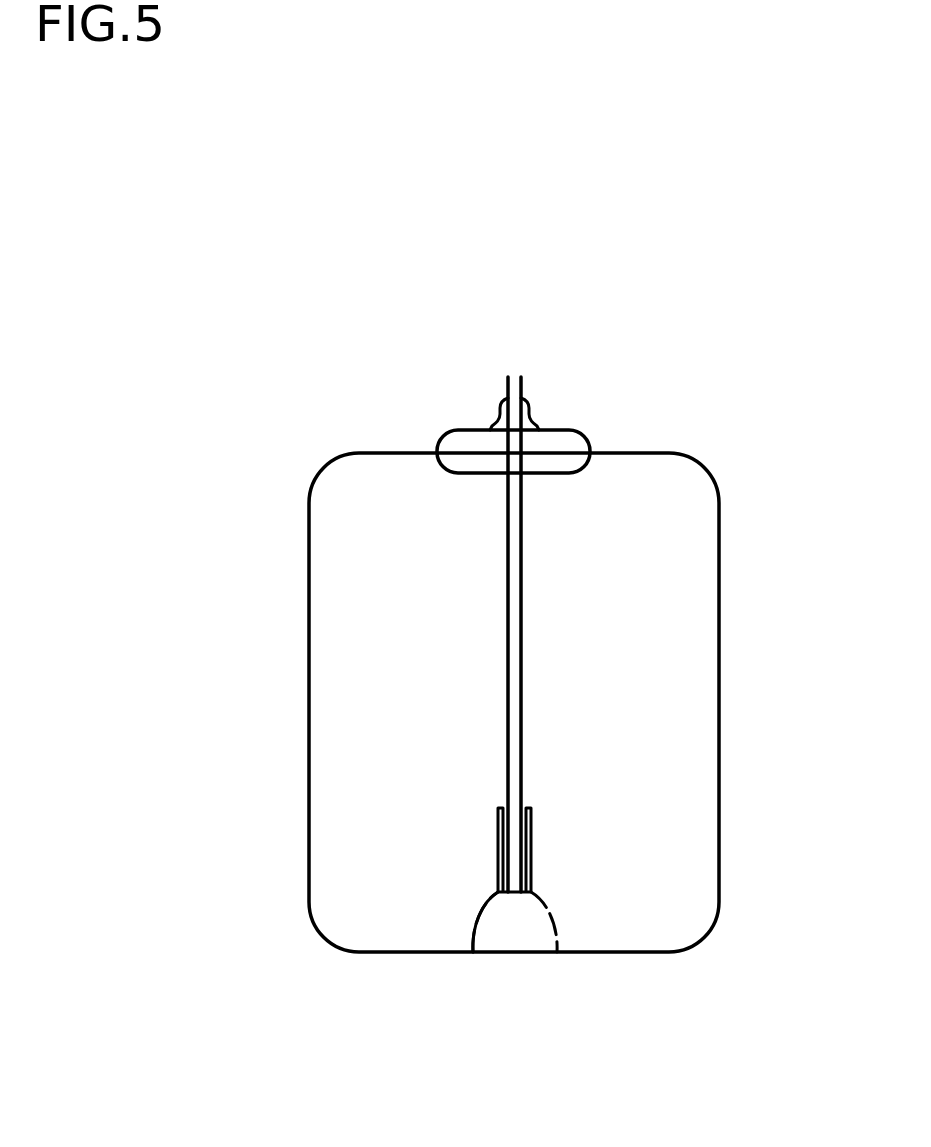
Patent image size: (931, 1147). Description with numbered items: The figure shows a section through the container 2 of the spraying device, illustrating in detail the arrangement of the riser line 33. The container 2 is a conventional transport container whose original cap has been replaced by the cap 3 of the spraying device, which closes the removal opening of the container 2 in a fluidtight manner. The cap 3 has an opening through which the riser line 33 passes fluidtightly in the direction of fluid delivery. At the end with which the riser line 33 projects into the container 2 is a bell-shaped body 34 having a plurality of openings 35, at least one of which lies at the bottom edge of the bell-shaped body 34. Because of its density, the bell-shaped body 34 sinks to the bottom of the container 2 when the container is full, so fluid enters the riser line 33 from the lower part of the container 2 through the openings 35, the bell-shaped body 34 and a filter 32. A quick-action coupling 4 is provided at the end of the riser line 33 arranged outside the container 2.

The container 2 is at (309, 685).
The cap 3 is at (566, 455).
The quick-action coupling 4 is at (497, 410).
The filter 32 is at (531, 835).
The riser line 33 is at (522, 650).
The bell-shaped body 34 is at (488, 893).
The openings 35 is at (467, 917).